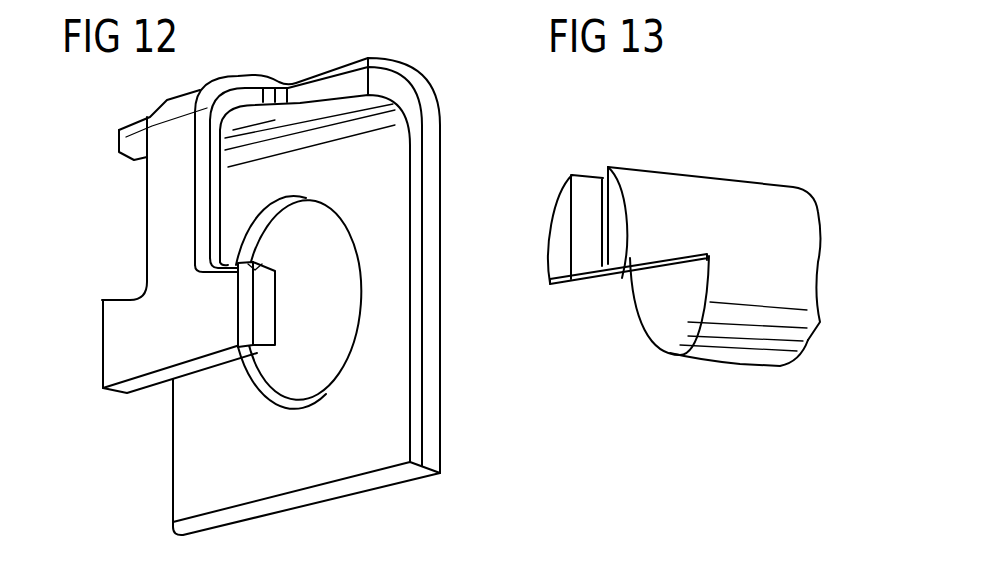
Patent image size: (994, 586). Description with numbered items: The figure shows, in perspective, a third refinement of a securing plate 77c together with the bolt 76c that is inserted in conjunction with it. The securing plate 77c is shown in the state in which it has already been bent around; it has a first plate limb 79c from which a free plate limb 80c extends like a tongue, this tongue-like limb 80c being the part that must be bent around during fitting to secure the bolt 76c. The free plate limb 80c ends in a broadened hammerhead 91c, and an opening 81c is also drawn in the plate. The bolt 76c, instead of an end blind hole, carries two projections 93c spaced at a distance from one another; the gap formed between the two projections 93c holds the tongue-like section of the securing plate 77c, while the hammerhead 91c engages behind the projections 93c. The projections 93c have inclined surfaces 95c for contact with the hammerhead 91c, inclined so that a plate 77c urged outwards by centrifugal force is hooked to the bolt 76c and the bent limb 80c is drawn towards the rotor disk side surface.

In FIG. 12, the securing plate 77c is at (440, 495).
In FIG. 12, the free plate limb 80c is at (160, 226).
In FIG. 12, the hammerhead 91c is at (153, 334).
In FIG. 12, the first plate limb 79c is at (212, 483).
In FIG. 12, the opening 81c is at (337, 340).
In FIG. 13, the bolt 76c is at (768, 172).
In FIG. 13, the projections 93c is at (558, 222).
In FIG. 13, the inclined surfaces 95c is at (622, 284).